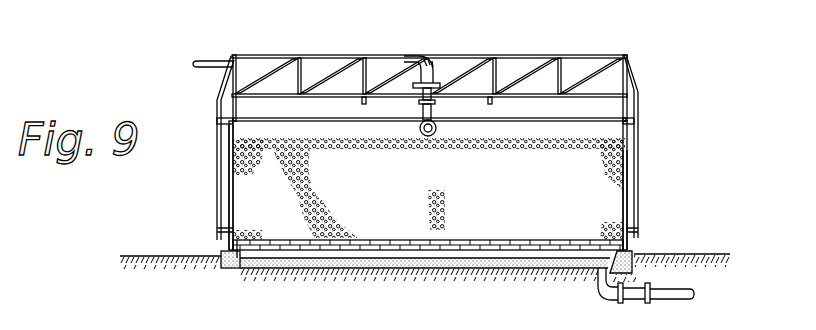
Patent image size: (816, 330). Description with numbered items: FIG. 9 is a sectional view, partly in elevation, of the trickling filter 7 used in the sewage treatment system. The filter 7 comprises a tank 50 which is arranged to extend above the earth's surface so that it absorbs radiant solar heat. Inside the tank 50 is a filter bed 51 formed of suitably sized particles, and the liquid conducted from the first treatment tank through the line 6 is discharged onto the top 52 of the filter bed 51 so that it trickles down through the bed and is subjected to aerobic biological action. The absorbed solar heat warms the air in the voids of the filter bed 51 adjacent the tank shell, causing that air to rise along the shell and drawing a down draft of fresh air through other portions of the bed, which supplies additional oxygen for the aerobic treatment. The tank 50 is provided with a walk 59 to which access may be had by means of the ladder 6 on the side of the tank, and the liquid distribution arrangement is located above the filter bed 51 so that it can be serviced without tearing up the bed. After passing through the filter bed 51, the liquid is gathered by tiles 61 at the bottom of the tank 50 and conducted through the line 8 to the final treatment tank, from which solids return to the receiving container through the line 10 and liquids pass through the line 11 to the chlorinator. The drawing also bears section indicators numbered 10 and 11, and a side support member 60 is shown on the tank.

The line 6 is at (208, 60).
The filter 7 is at (627, 148).
The line 8 is at (672, 300).
The line 10 is at (172, 55).
The line 11 is at (429, 0).
The tank 50 is at (627, 172).
The filter bed 51 is at (230, 153).
The top of the filter bed 52 is at (263, 146).
The walk 59 is at (636, 82).
The support post 60 is at (640, 201).
The tiles 61 is at (382, 246).